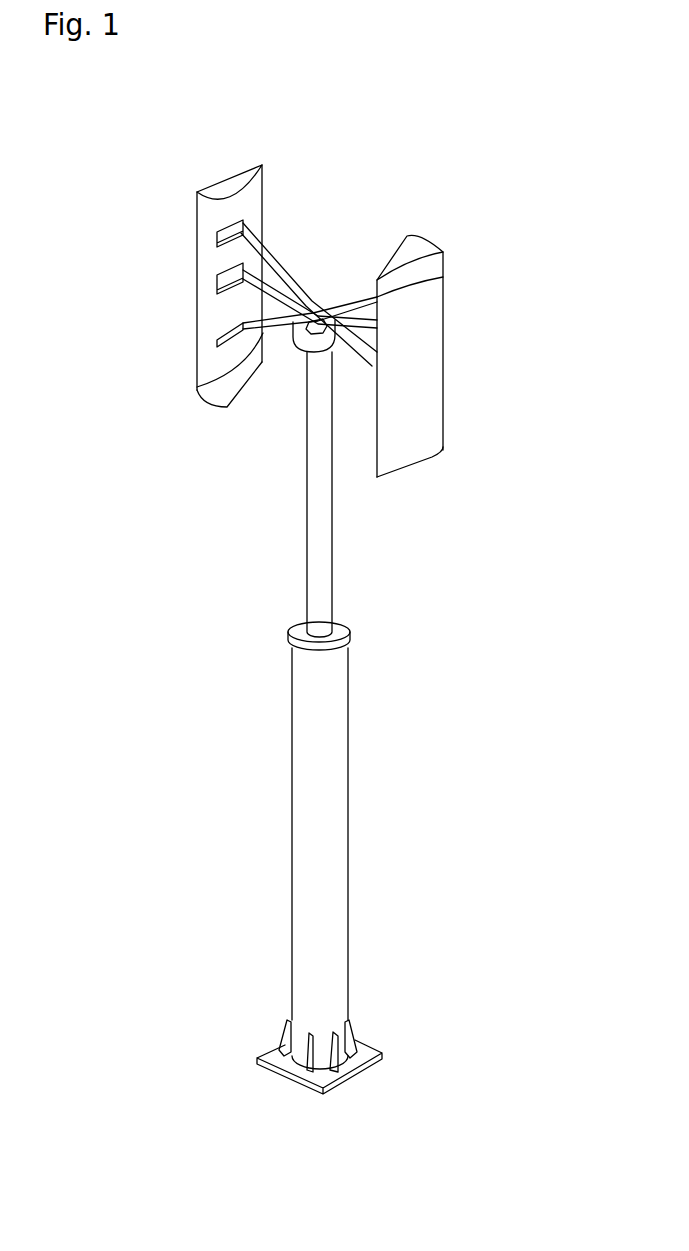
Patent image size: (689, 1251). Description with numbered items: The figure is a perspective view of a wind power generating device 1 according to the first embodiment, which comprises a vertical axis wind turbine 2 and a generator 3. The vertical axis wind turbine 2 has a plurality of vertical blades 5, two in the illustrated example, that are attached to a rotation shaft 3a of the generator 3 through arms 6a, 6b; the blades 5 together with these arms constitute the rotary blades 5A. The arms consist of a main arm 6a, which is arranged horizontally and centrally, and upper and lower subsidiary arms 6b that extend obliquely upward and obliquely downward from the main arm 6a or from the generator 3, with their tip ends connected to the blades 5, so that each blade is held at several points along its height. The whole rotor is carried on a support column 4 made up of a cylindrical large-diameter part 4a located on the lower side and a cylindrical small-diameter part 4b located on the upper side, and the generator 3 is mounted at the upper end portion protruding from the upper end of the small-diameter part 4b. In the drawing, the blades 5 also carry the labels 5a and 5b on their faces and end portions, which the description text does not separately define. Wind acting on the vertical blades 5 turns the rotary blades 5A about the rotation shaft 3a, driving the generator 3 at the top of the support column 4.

The wind power generating device 1 is at (470, 166).
The vertical axis wind turbine 2 is at (169, 273).
The generator 3 is at (296, 348).
The rotation shaft 3a is at (323, 327).
The support column 4 is at (440, 590).
The large-diameter part 4a is at (348, 760).
The small-diameter part 4b is at (332, 557).
The vertical blades 5 is at (184, 318).
The rotary blades 5A is at (460, 401).
The blade body 5a is at (210, 227).
The blade end portion 5b is at (230, 183).
The main arm 6a is at (277, 297).
The subsidiary arms 6b is at (197, 378).